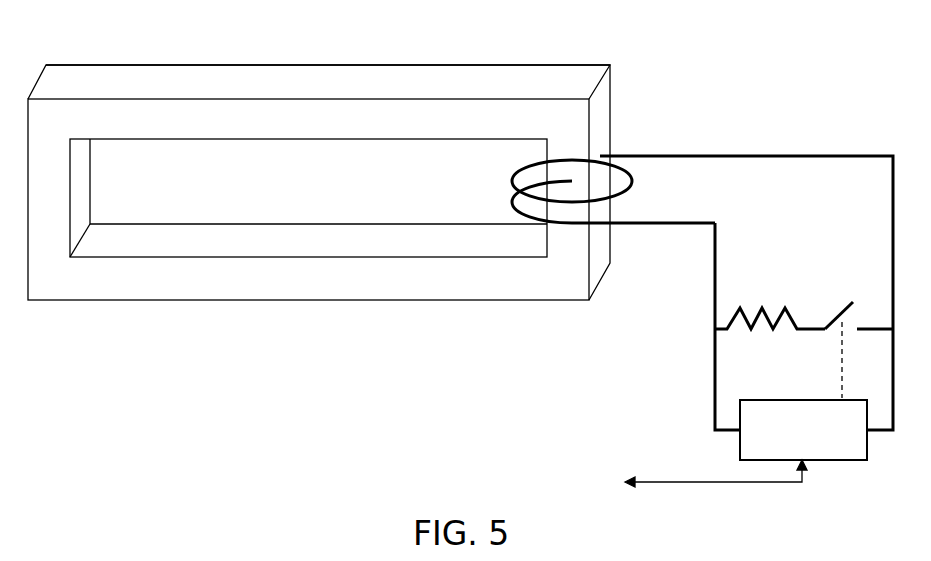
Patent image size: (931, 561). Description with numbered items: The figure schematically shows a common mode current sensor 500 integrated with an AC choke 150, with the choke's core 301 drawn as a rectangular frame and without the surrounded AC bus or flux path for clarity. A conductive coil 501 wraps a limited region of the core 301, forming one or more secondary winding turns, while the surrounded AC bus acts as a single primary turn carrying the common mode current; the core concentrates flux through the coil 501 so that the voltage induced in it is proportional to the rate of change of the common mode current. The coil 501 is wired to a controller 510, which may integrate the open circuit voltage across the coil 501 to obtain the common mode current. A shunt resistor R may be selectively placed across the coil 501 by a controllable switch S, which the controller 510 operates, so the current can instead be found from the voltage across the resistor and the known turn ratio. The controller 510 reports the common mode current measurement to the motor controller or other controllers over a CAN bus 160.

The AC choke 150 is at (229, 45).
The core 301 is at (328, 64).
The common mode current sensor 500 is at (682, 66).
The conductive coil 501 is at (512, 202).
The controller 510 is at (816, 457).
The CAN bus 160 is at (725, 481).